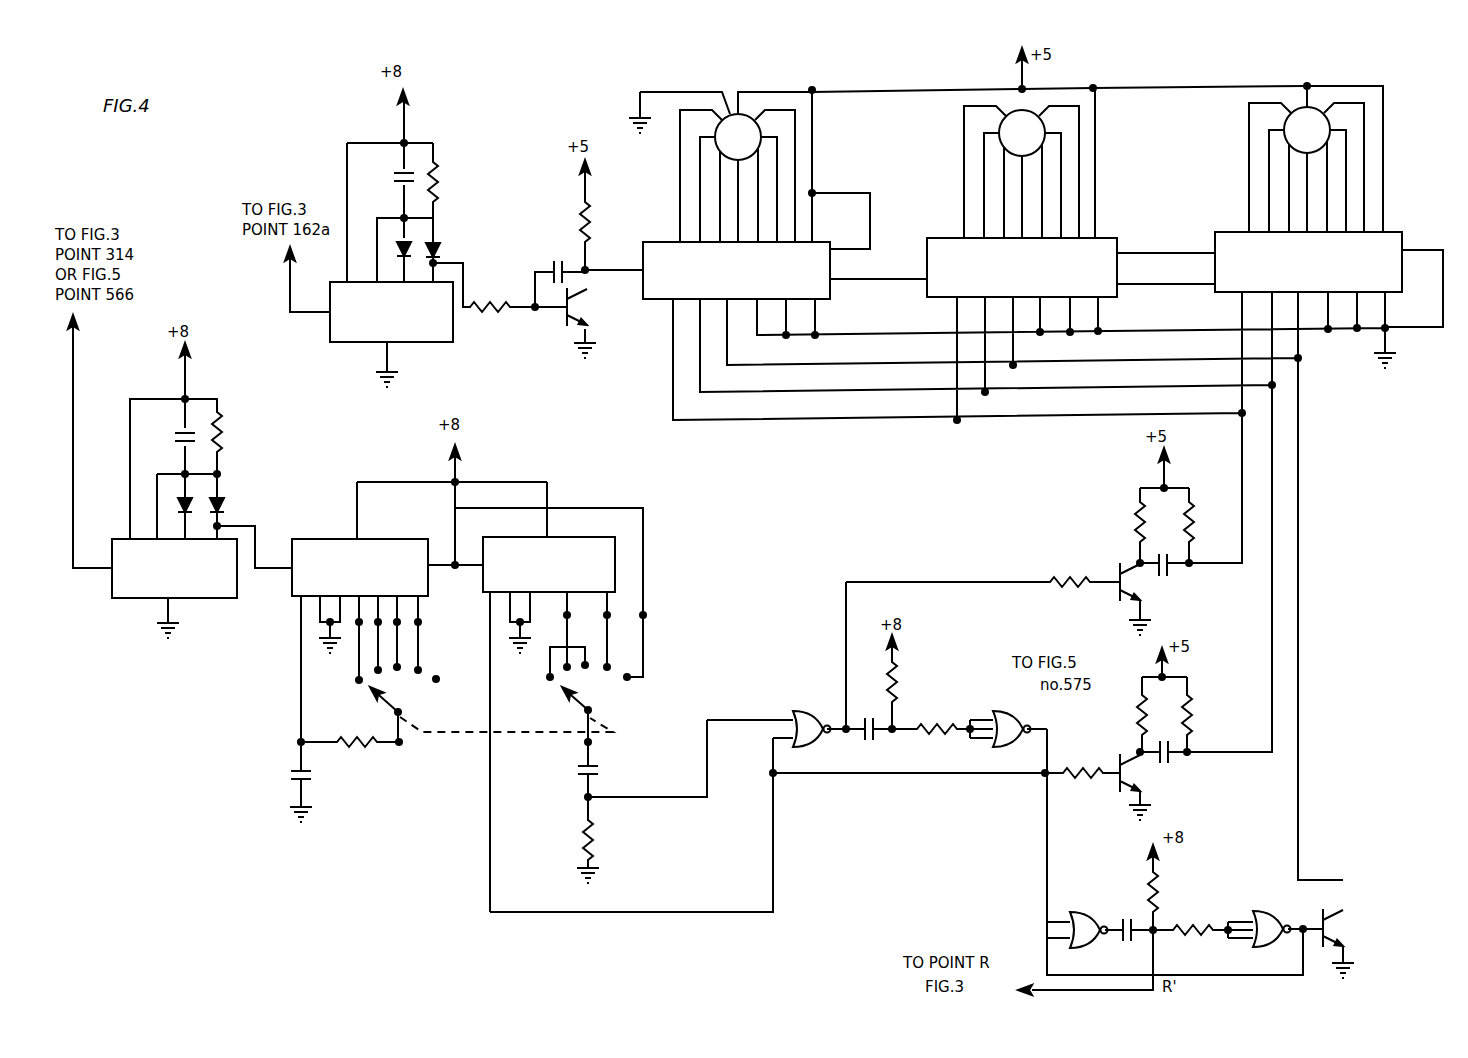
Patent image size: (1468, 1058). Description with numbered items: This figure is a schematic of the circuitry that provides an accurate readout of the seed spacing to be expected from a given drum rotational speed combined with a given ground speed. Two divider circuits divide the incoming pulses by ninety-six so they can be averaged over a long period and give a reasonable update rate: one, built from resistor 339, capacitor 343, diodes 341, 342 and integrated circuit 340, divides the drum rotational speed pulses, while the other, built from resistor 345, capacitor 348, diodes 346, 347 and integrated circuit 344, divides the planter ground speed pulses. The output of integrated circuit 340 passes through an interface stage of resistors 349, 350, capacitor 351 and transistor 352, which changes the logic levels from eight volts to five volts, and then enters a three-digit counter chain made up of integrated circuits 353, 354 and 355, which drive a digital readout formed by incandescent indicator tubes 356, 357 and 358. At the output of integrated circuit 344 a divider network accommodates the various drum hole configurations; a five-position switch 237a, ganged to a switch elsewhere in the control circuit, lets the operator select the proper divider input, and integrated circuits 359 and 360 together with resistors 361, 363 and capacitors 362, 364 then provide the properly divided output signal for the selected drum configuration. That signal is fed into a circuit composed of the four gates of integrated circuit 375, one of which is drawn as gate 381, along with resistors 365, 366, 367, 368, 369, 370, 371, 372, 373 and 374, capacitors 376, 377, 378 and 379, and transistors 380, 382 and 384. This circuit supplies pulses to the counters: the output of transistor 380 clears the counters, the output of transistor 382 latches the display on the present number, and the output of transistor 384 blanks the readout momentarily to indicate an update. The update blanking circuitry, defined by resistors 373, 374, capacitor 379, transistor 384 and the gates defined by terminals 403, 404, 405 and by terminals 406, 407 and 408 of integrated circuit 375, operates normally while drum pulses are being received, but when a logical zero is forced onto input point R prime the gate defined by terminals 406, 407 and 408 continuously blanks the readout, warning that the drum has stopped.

The 5-position switch 237a is at (506, 715).
The resistor 339 is at (440, 192).
The integrated circuit 340 is at (391, 312).
The diode 341 is at (400, 243).
The diode 342 is at (437, 243).
The capacitor 343 is at (400, 178).
The integrated circuit 344 is at (174, 568).
The resistor 345 is at (224, 425).
The diode 346 is at (225, 502).
The diode 347 is at (180, 500).
The capacitor 348 is at (175, 436).
The resistor 349 is at (490, 302).
The resistor 350 is at (590, 225).
The capacitor 351 is at (560, 260).
The transistor 352 is at (578, 300).
The integrated circuit 353 is at (736, 270).
The integrated circuit 354 is at (1022, 267).
The integrated circuit 355 is at (1308, 262).
The incandescent indicator tube 356 is at (737, 176).
The incandescent indicator tube 357 is at (1021, 172).
The incandescent indicator tube 358 is at (1306, 159).
The integrated circuit 359 is at (360, 567).
The integrated circuit 360 is at (549, 564).
The resistor 361 is at (348, 736).
The capacitor 362 is at (315, 776).
The resistor 363 is at (583, 840).
The capacitor 364 is at (600, 768).
The resistor 365 is at (900, 675).
The resistor 366 is at (935, 738).
The resistor 367 is at (1070, 592).
The resistor 368 is at (1135, 512).
The resistor 369 is at (1192, 512).
The resistor 370 is at (1135, 705).
The resistor 371 is at (1193, 700).
The resistor 372 is at (1100, 765).
The resistor 373 is at (1160, 880).
The resistor 374 is at (1198, 935).
The integrated circuit 375 is at (790, 712).
The capacitor 376 is at (866, 742).
The capacitor 377 is at (1170, 563).
The capacitor 378 is at (1172, 768).
The capacitor 379 is at (1128, 918).
The transistor 380 is at (1135, 590).
The NOR gate 381 is at (1020, 740).
The transistor 382 is at (1142, 795).
The transistor 384 is at (1345, 915).
The terminal 403 is at (1047, 938).
The terminal 404 is at (1047, 922).
The terminal 405 is at (1080, 944).
The terminal 406 is at (1272, 941).
The terminal 407 is at (1228, 938).
The terminal 408 is at (1228, 922).